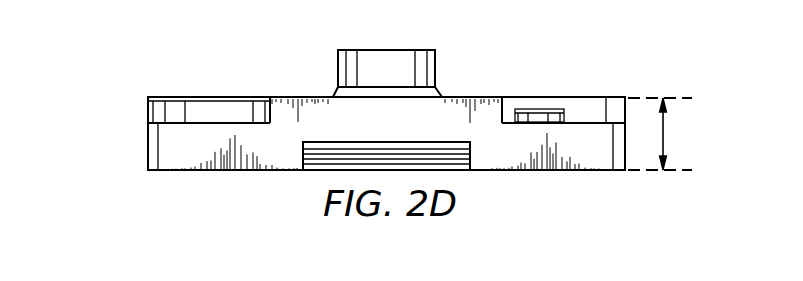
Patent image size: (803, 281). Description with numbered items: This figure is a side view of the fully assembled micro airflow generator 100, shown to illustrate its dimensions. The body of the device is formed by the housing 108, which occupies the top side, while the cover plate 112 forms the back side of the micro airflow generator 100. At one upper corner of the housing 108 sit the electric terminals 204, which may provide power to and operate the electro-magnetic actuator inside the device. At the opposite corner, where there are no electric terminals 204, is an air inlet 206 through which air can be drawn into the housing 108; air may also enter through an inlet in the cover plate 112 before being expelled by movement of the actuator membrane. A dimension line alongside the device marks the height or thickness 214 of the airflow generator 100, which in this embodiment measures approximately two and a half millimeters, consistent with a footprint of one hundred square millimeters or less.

The micro airflow generator 100 is at (118, 47).
The housing 108 is at (147, 124).
The cover plate 112 is at (322, 162).
The electric terminals 204 is at (218, 108).
The air inlet 206 is at (513, 108).
The height or thickness 214 is at (665, 131).